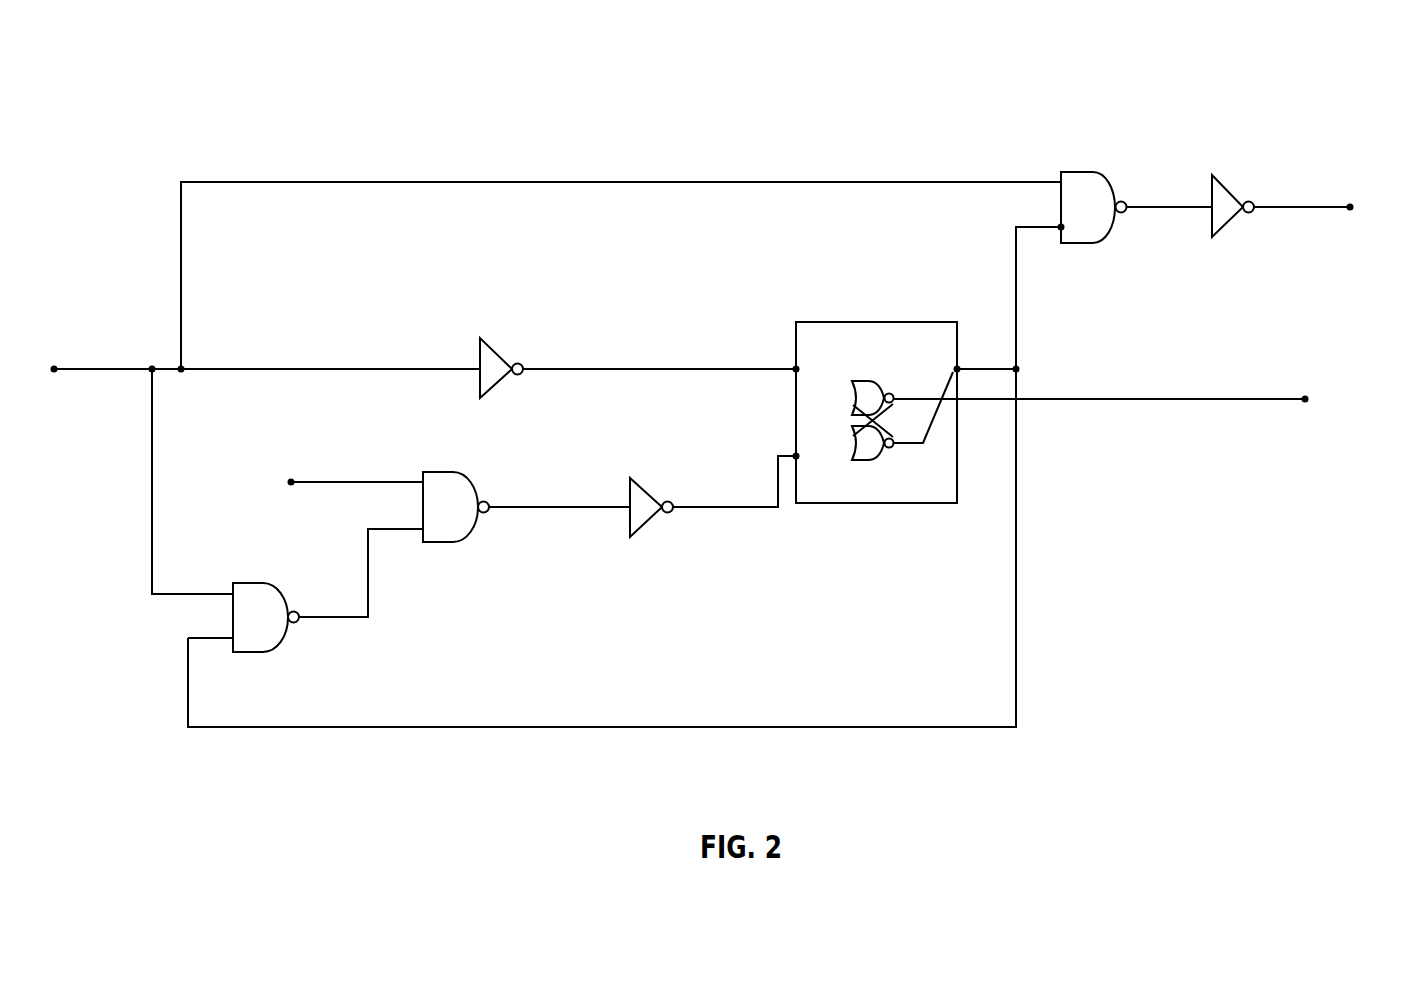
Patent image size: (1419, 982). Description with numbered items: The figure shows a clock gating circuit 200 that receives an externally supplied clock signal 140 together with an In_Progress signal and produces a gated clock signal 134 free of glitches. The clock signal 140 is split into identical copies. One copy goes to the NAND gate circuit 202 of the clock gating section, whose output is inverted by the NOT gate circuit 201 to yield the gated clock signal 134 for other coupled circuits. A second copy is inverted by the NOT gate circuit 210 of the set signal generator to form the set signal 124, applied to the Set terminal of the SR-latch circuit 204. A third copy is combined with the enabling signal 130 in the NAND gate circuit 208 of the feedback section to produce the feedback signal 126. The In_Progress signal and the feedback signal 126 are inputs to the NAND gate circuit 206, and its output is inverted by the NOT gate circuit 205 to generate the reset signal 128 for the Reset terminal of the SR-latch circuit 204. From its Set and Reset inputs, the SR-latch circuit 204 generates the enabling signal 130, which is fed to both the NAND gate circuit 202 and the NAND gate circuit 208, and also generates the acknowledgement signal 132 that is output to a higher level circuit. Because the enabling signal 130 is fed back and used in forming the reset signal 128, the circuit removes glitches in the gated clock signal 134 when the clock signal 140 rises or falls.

The clock gating circuit 200 is at (234, 92).
The NOT gate circuit 201 is at (1213, 178).
The NAND gate circuit 202 is at (1088, 172).
The SR-latch circuit 204 is at (929, 512).
The NOT gate circuit 205 is at (630, 480).
The NAND gate circuit 206 is at (452, 472).
The NAND gate circuit 208 is at (252, 583).
The NOT gate circuit 210 is at (480, 340).
The clock signal 140 is at (266, 444).
The set signal 124 is at (661, 352).
The feedback signal 126 is at (373, 594).
The reset signal 128 is at (786, 503).
The enabling signal 130 is at (685, 476).
The acknowledgement signal 132 is at (1120, 425).
The gated clock signal 134 is at (1317, 237).